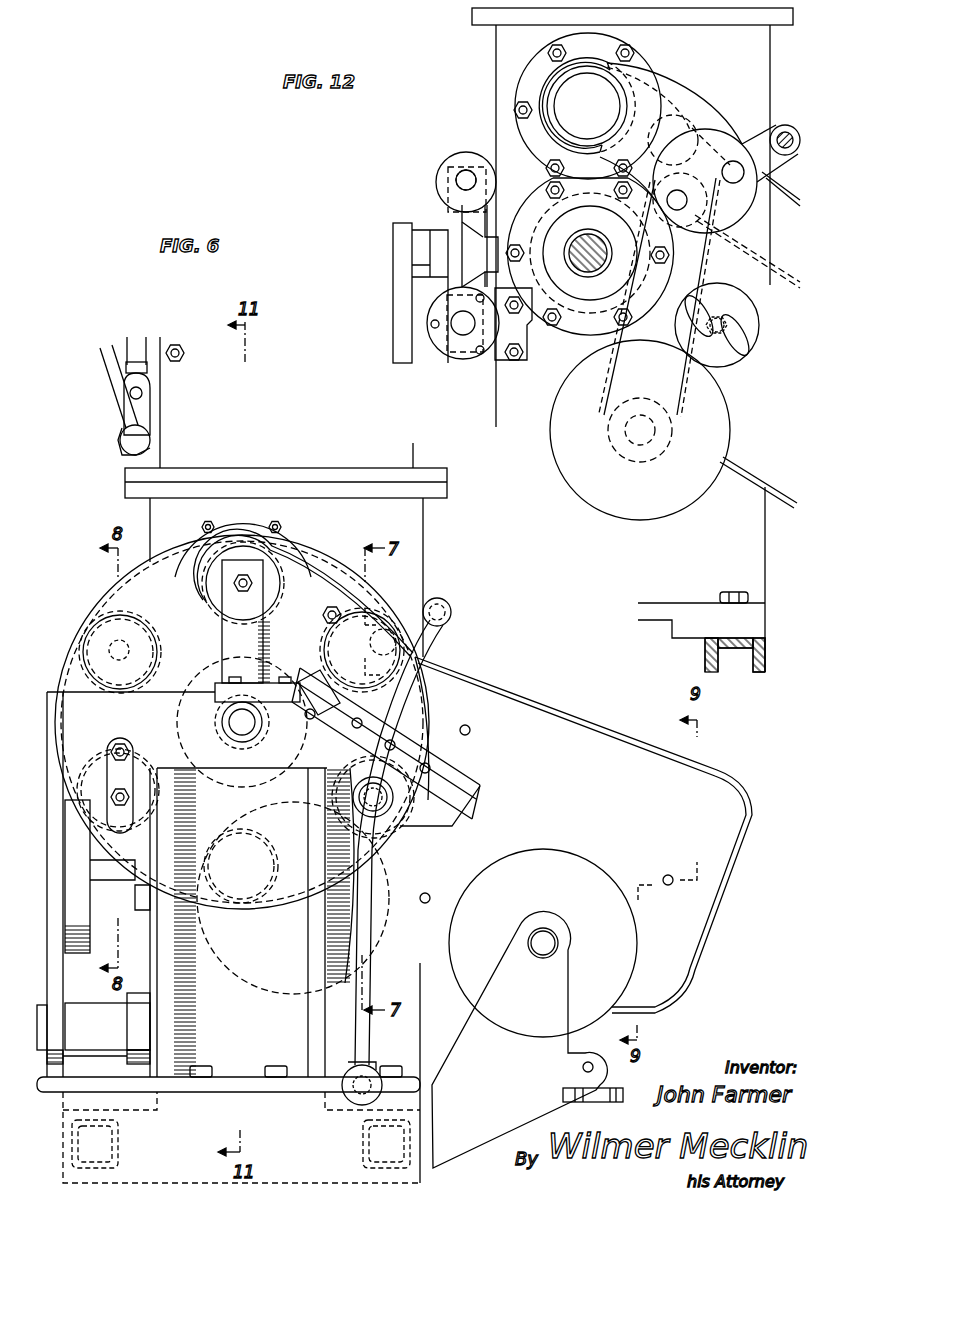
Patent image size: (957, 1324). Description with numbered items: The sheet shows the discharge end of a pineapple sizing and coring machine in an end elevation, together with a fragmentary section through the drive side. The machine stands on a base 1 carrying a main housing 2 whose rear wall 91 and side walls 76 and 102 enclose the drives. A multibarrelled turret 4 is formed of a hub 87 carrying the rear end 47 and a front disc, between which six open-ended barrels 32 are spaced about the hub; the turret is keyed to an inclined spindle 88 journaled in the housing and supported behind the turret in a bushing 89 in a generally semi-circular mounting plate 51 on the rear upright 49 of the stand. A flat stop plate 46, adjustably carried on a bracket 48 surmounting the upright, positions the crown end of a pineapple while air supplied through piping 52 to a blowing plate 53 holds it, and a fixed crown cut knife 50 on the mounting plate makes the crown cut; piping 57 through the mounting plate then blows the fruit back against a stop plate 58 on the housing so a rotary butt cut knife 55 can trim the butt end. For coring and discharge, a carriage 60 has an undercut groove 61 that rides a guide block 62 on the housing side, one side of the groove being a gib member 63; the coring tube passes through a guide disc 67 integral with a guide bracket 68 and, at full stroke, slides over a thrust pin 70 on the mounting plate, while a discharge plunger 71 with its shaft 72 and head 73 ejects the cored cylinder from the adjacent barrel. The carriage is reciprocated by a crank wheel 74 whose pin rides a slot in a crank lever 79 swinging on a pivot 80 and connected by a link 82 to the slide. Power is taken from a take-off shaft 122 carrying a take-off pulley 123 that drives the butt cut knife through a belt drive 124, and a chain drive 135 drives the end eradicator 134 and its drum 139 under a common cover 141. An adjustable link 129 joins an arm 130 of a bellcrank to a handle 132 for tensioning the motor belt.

In FIG. 12, the base 1 is at (770, 658).
In FIG. 6, the base 1 is at (58, 1142).
In FIG. 12, the main housing 2 is at (494, 80).
In FIG. 6, the main housing 2 is at (433, 548).
In FIG. 6, the turret 4 is at (78, 620).
In FIG. 6, the barrels 32 is at (168, 613).
In FIG. 6, the stop plate 46 is at (206, 576).
In FIG. 6, the rear end of turret 47 is at (197, 648).
In FIG. 6, the bracket 48 is at (243, 648).
In FIG. 6, the rear upright 49 is at (252, 1033).
In FIG. 6, the crown cut knife 50 is at (458, 770).
In FIG. 6, the mounting plate 51 is at (426, 830).
In FIG. 6, the piping 52 is at (392, 682).
In FIG. 12, the blowing plate 53 is at (720, 160).
In FIG. 12, the butt cut knife 55 is at (650, 499).
In FIG. 6, the butt cut knife 55 is at (388, 886).
In FIG. 6, the piping 57 is at (393, 800).
In FIG. 12, the stop plate 58 is at (755, 333).
In FIG. 12, the carriage 60 is at (438, 218).
In FIG. 12, the undercut groove 61 is at (462, 290).
In FIG. 12, the guide block 62 is at (486, 256).
In FIG. 12, the gib member 63 is at (487, 218).
In FIG. 12, the guide disc 67 is at (440, 347).
In FIG. 12, the guide bracket 68 is at (500, 360).
In FIG. 6, the thrust pin 70 is at (110, 796).
In FIG. 12, the discharge plunger 71 is at (466, 150).
In FIG. 6, the discharge plunger 71 is at (124, 614).
In FIG. 12, the plunger shaft 72 is at (466, 192).
In FIG. 6, the plunger shaft 72 is at (116, 648).
In FIG. 12, the plunger head 73 is at (438, 172).
In FIG. 6, the plunger head 73 is at (128, 681).
In FIG. 6, the crank wheel 74 is at (90, 910).
In FIG. 12, the side of housing 76 is at (496, 396).
In FIG. 6, the side of housing 76 is at (150, 955).
In FIG. 6, the crank lever 79 is at (47, 857).
In FIG. 6, the pivot 80 is at (102, 1002).
In FIG. 12, the link 82 is at (422, 277).
In FIG. 6, the hub 87 is at (216, 724).
In FIG. 12, the spindle 88 is at (590, 232).
In FIG. 6, the spindle 88 is at (230, 738).
In FIG. 6, the bushing 89 is at (256, 738).
In FIG. 12, the rear wall 91 is at (722, 63).
In FIG. 6, the rear wall 91 is at (345, 533).
In FIG. 12, the side wall 102 is at (770, 72).
In FIG. 6, the side wall 102 is at (422, 1012).
In FIG. 12, the take-off shaft 122 is at (705, 203).
In FIG. 12, the take-off pulley 123 is at (676, 233).
In FIG. 6, the take-off pulley 123 is at (306, 676).
In FIG. 12, the belt drive 124 is at (625, 340).
In FIG. 6, the adjustable link 129 is at (136, 336).
In FIG. 6, the arm 130 is at (150, 410).
In FIG. 6, the handle 132 is at (112, 388).
In FIG. 6, the end eradicator 134 is at (543, 845).
In FIG. 12, the chain drive 135 is at (748, 262).
In FIG. 6, the drum 139 is at (556, 898).
In FIG. 12, the cover 141 is at (788, 391).
In FIG. 6, the cover 141 is at (588, 793).